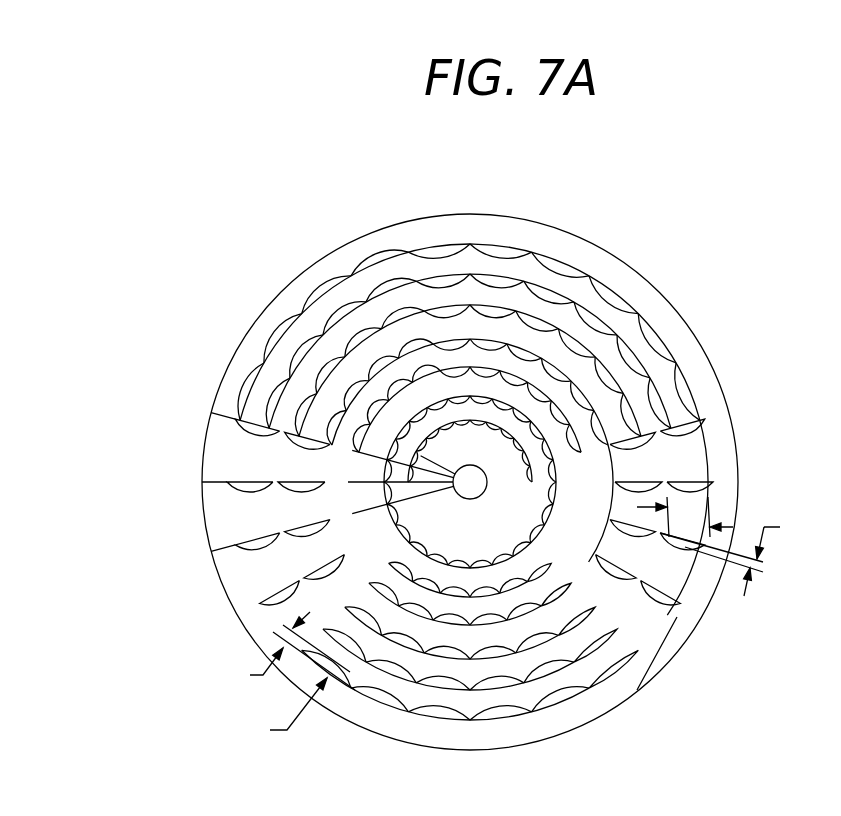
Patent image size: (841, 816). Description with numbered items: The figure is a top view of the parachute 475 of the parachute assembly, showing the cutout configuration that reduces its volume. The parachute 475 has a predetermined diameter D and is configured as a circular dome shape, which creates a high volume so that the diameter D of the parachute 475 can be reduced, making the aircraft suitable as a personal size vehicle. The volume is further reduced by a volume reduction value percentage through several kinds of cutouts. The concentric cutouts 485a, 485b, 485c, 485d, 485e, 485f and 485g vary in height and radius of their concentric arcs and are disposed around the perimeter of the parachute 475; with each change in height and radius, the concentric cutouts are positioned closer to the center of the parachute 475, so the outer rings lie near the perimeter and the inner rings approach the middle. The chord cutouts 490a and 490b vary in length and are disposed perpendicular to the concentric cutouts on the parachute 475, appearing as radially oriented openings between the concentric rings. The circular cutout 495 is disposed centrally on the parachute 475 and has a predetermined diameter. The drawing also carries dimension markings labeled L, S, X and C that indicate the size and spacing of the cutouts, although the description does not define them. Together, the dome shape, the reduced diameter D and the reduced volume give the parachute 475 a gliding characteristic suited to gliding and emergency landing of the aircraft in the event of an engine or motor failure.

The parachute 475 is at (642, 192).
The concentric cutout 485a is at (438, 717).
The concentric cutout 485b is at (497, 687).
The concentric cutout 485c is at (538, 643).
The concentric cutout 485d is at (582, 393).
The concentric cutout 485e is at (543, 387).
The concentric cutout 485f is at (457, 393).
The concentric cutout 485g is at (430, 433).
The chord cutout 490a is at (320, 447).
The chord cutout 490b is at (248, 485).
The circular cutout 495 is at (470, 499).
The predetermined diameter D is at (717, 368).
The cutting element length L is at (685, 517).
The spacing between cutting elements S is at (728, 556).
The cutting element offset X is at (288, 651).
The cut width C is at (288, 710).